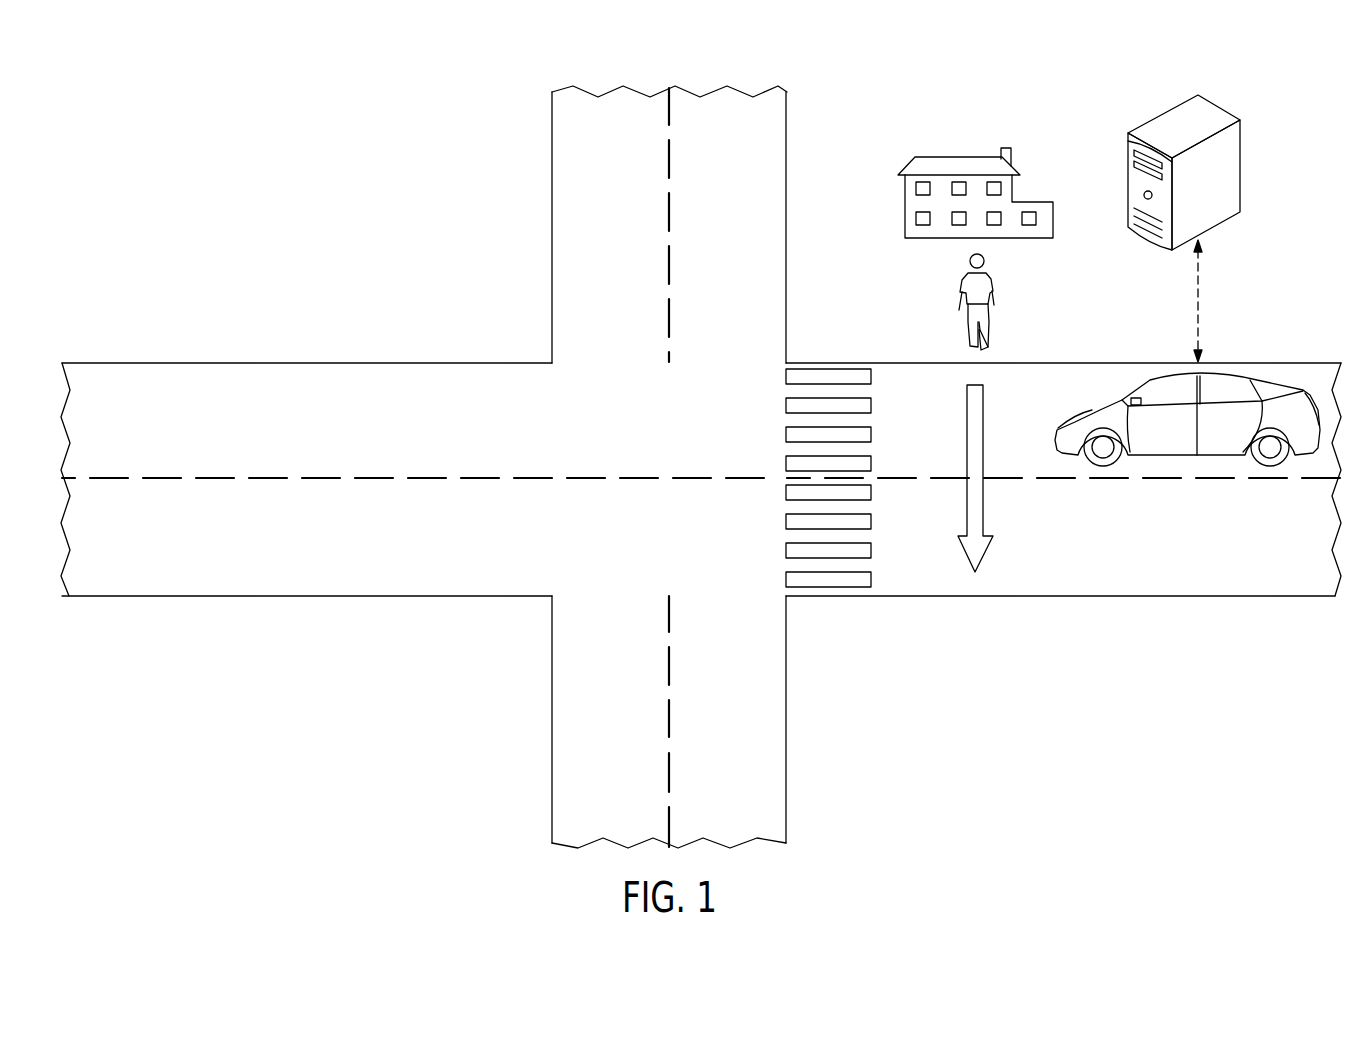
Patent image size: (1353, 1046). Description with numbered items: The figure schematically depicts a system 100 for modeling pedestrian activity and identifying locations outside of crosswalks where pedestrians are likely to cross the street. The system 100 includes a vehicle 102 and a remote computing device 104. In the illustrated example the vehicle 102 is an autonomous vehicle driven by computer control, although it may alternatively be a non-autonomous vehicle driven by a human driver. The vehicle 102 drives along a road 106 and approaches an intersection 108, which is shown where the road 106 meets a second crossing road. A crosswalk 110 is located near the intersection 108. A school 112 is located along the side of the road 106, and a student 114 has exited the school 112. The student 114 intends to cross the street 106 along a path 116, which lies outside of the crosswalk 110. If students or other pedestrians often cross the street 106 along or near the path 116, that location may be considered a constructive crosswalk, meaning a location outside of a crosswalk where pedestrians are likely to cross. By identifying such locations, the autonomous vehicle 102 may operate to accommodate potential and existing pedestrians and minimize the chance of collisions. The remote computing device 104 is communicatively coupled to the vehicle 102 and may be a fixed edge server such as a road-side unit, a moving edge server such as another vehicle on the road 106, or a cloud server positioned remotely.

The system 100 is at (121, 126).
The vehicle 102 is at (1183, 455).
The remote computing device 104 is at (1240, 165).
The road 106 is at (1240, 578).
The intersection 108 is at (623, 467).
The crosswalk 110 is at (828, 421).
The school 112 is at (957, 157).
The student 114 is at (962, 301).
The path 116 is at (985, 502).